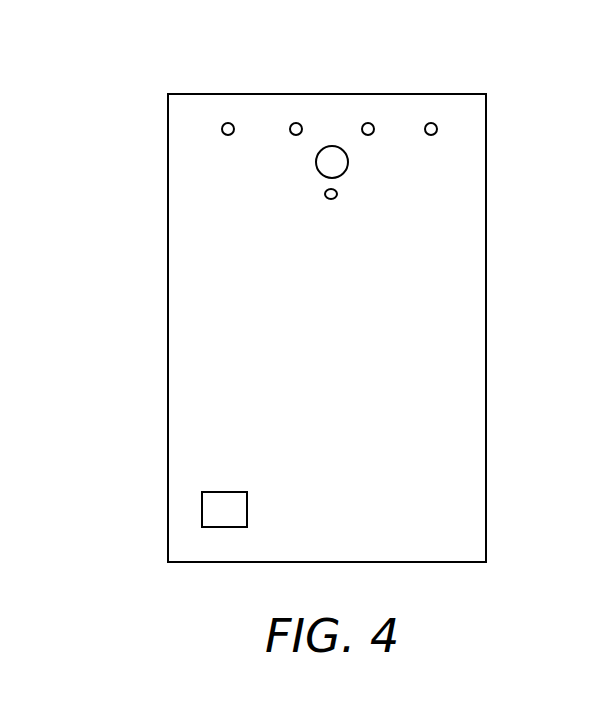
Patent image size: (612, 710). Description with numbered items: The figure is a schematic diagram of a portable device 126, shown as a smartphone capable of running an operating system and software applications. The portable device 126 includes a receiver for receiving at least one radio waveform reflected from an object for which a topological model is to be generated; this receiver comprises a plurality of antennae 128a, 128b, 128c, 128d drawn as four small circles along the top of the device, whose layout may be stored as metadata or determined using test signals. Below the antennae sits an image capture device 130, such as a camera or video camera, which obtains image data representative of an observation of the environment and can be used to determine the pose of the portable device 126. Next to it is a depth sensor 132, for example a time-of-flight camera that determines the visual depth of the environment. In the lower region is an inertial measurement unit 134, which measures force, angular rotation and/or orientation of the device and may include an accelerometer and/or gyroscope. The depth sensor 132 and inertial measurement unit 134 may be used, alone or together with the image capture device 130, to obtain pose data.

The portable device 126 is at (138, 115).
The antenna 128a is at (228, 122).
The antenna 128b is at (296, 122).
The antenna 128c is at (368, 122).
The antenna 128d is at (431, 122).
The image capture device 130 is at (347, 160).
The depth sensor 132 is at (336, 190).
The inertial measurement unit 134 is at (217, 492).